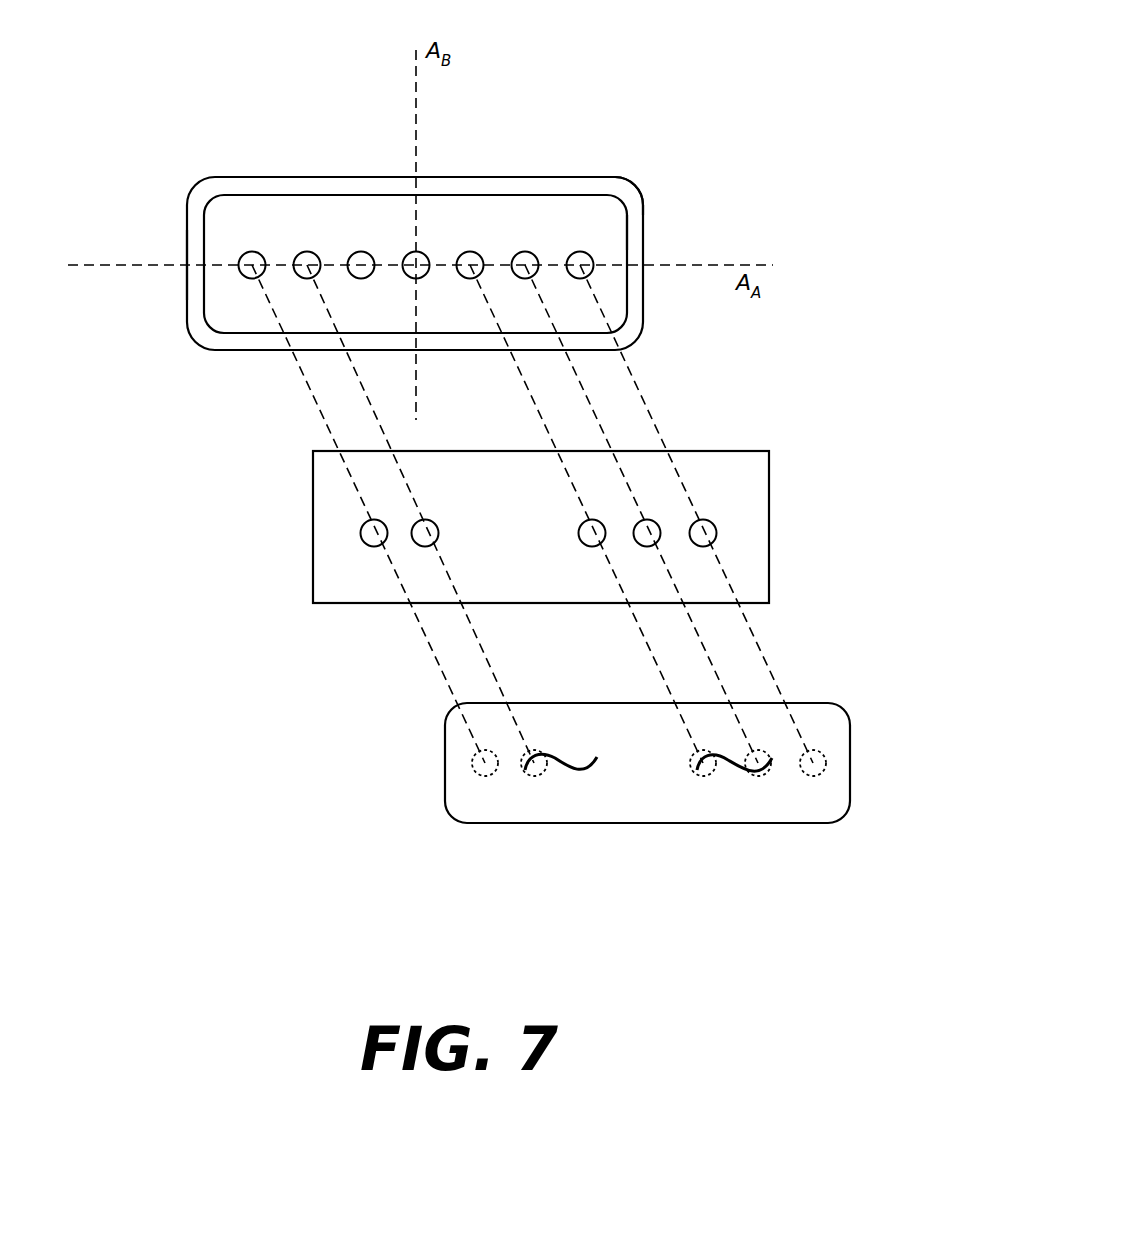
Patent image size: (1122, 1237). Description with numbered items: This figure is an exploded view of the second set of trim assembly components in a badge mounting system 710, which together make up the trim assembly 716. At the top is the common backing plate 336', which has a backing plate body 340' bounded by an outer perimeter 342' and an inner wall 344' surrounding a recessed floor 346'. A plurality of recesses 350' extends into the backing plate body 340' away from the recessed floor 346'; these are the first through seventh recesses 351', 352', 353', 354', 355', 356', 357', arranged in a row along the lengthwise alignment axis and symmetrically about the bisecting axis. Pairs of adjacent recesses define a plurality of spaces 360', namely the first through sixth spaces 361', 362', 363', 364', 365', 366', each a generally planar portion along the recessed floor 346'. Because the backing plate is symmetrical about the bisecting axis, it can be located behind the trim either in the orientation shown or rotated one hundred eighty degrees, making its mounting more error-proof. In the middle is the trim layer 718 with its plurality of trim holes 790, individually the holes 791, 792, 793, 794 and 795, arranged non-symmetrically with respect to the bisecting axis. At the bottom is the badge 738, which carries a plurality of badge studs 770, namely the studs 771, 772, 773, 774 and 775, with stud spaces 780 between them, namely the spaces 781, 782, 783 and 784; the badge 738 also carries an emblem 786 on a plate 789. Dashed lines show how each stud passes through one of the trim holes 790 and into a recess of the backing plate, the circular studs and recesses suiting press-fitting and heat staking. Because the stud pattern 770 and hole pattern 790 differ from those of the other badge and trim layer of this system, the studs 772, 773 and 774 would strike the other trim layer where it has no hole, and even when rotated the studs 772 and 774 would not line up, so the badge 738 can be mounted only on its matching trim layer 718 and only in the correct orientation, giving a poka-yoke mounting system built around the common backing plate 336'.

The connector assembly 710 is at (752, 125).
The trim assembly 716 is at (841, 205).
The plurality of recesses 350' is at (349, 236).
The backing plate body 340' is at (361, 268).
The outer perimeter 342' is at (124, 256).
The inner shell side wall 344' is at (677, 227).
The recessed floor 346' is at (661, 292).
The common backing plate 336' is at (645, 168).
The plurality of spaces 360' is at (152, 377).
The first recess 351' is at (358, 441).
The second recess 352' is at (411, 450).
The third recess 353' is at (376, 199).
The fourth recess 354' is at (438, 210).
The fifth recess 355' is at (580, 437).
The sixth recess 356' is at (635, 437).
The seventh recess 357' is at (690, 422).
The first space 361' is at (249, 337).
The second space 362' is at (327, 334).
The third space 363' is at (367, 347).
The fourth space 364' is at (458, 348).
The fifth space 365' is at (502, 332).
The sixth space 366' is at (562, 340).
The trim layer 718 is at (767, 495).
The plurality of trim holes 790 is at (788, 580).
The first aperture 791 is at (362, 535).
The second aperture 792 is at (433, 527).
The third aperture 793 is at (596, 520).
The fourth aperture 794 is at (658, 525).
The fifth aperture 795 is at (717, 535).
The badge 738 is at (445, 795).
The plurality of badge studs 770 is at (862, 766).
The first pad 771 is at (472, 763).
The badge stud 772 is at (522, 760).
The badge stud 773 is at (690, 757).
The badge stud 774 is at (745, 760).
The fifth pad 775 is at (800, 760).
The pad 789 is at (837, 750).
The trace set 780 is at (530, 885).
The first trace 781 is at (510, 768).
The second trace 782 is at (617, 765).
The third trace 783 is at (727, 772).
The fourth trace 784 is at (787, 763).
The jumper trace 786 is at (563, 776).